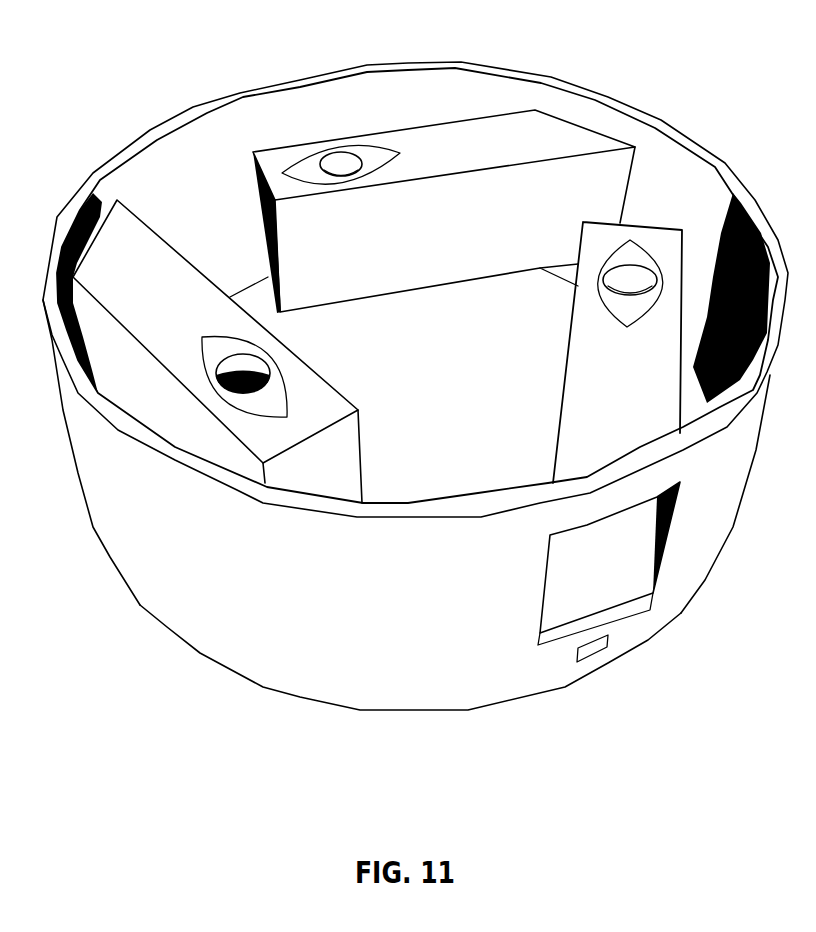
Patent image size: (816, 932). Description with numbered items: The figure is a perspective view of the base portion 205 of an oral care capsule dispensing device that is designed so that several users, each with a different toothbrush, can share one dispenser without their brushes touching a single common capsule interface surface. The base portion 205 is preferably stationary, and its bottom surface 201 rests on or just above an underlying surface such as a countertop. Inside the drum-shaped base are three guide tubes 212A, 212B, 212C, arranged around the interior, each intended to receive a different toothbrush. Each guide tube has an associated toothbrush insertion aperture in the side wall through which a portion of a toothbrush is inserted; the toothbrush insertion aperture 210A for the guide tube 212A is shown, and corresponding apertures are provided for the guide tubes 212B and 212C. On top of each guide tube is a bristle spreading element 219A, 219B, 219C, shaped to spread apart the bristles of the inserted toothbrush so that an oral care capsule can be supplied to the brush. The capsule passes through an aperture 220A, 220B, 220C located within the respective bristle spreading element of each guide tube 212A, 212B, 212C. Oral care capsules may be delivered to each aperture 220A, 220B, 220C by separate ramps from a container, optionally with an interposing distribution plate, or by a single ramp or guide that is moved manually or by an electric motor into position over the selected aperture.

The bottom surface 201 is at (370, 710).
The base portion 205 is at (227, 600).
The toothbrush insertion aperture 210A is at (538, 645).
The guide tube 212A is at (575, 352).
The guide tube 212B is at (432, 163).
The guide tube 212C is at (193, 331).
The bristle spreading element 219A is at (628, 315).
The bristle spreading element 219B is at (390, 152).
The bristle spreading element 219C is at (203, 343).
The aperture 220A is at (603, 278).
The aperture 220B is at (330, 153).
The aperture 220C is at (217, 380).